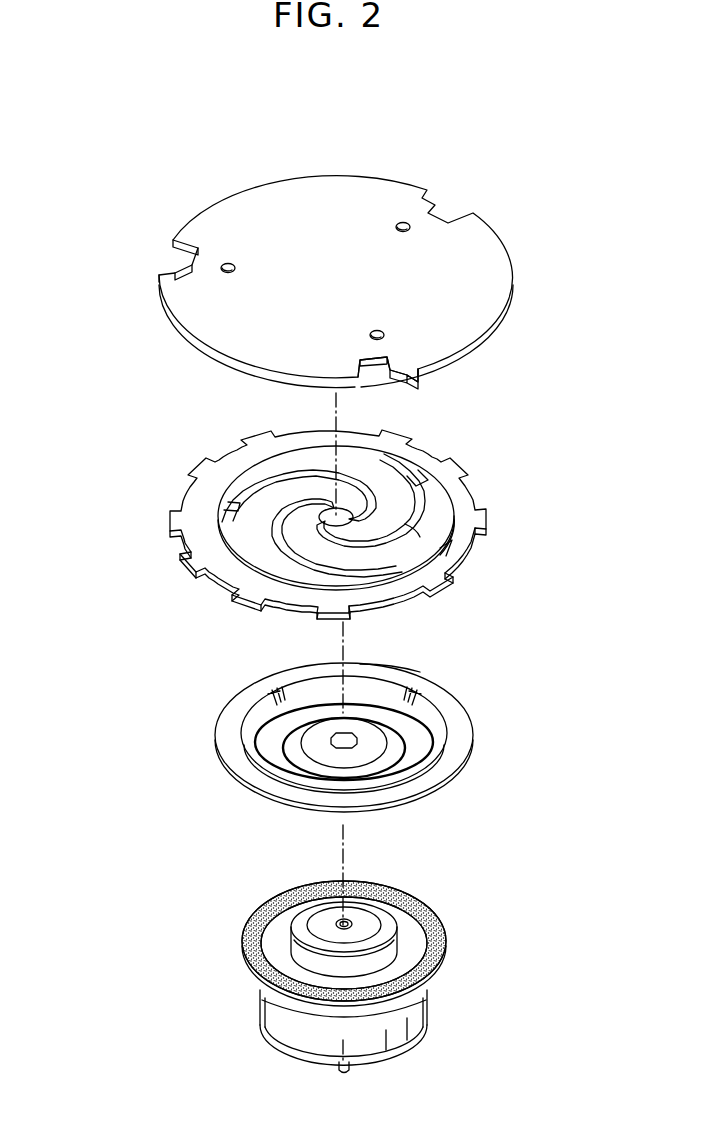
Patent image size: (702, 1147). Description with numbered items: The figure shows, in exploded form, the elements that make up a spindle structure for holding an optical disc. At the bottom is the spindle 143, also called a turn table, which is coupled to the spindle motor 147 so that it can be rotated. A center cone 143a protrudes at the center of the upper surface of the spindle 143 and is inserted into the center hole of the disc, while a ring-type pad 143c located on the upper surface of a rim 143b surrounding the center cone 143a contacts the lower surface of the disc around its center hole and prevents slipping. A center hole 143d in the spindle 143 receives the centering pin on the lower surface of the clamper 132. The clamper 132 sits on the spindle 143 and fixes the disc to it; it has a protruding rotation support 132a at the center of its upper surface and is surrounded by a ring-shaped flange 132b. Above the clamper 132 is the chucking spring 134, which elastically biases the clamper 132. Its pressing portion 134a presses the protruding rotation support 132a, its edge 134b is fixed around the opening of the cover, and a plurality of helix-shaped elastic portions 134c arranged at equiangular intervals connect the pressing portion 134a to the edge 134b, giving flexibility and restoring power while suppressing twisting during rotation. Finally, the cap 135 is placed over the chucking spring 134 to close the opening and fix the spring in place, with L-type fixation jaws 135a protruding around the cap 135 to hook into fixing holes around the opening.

The cap 135 is at (136, 230).
The fixation jaw 135a is at (413, 385).
The chucking spring 134 is at (139, 475).
The pressing portion 134a is at (331, 517).
The edge 134b is at (468, 538).
The elastic portion 134c is at (413, 530).
The clamper 132 is at (188, 699).
The protruding rotation support 132a is at (340, 734).
The flange 132b is at (391, 672).
The spindle 143 is at (199, 916).
The center cone 143a is at (300, 925).
The rim 143b is at (400, 920).
The ring-type pad 143c is at (440, 926).
The center hole 143d is at (343, 921).
The spindle motor 147 is at (425, 1005).